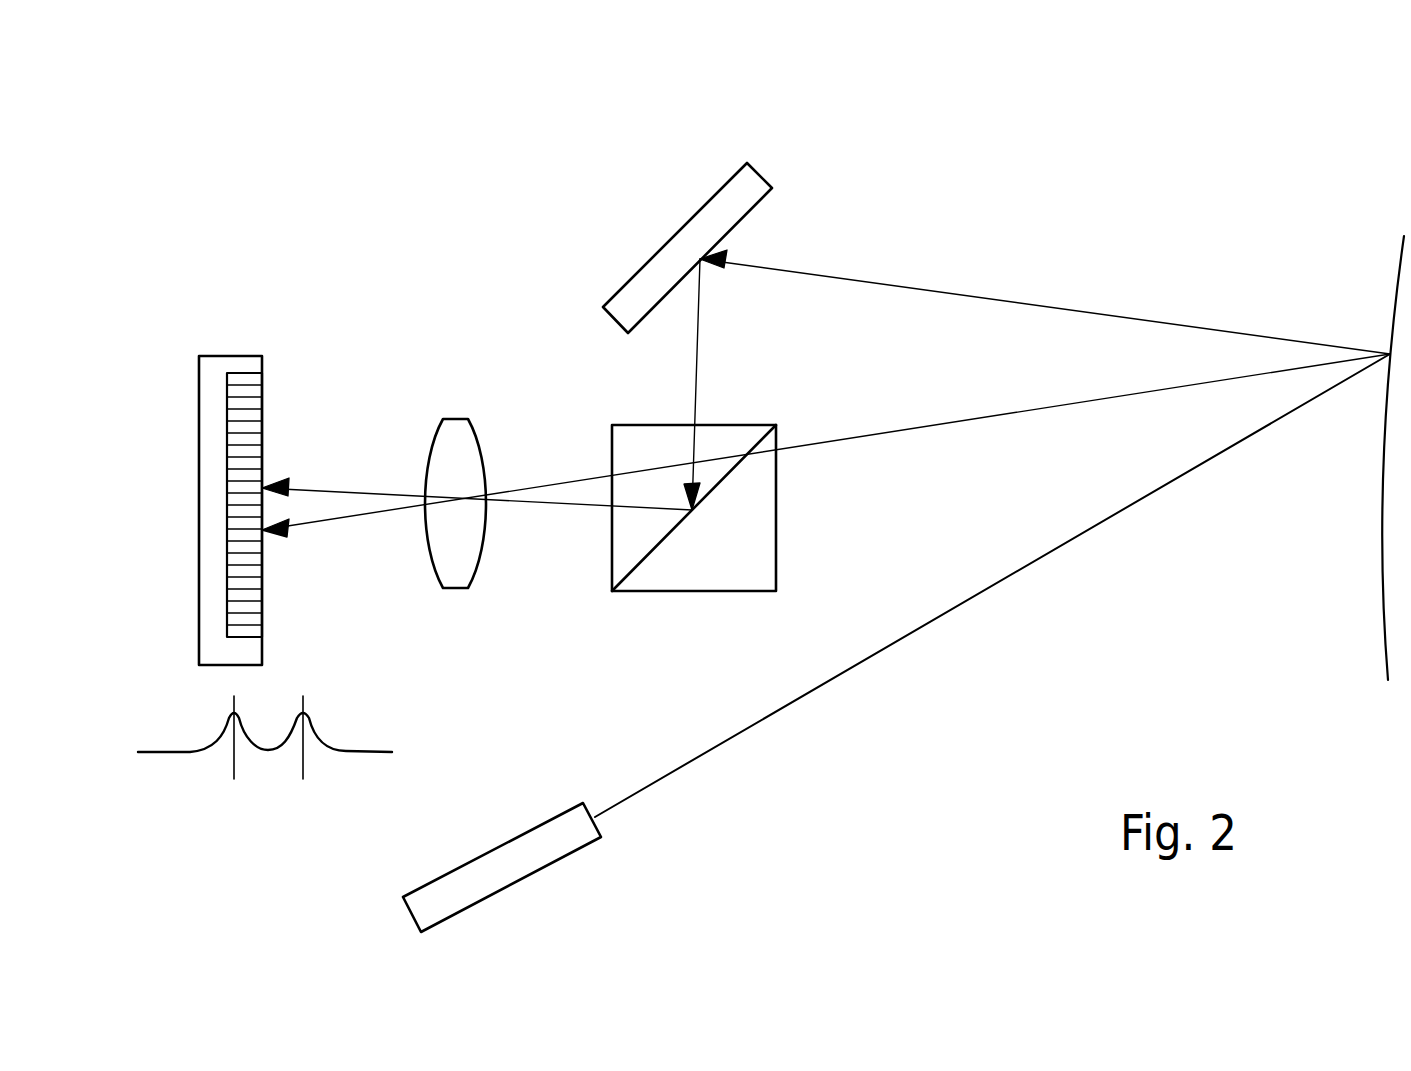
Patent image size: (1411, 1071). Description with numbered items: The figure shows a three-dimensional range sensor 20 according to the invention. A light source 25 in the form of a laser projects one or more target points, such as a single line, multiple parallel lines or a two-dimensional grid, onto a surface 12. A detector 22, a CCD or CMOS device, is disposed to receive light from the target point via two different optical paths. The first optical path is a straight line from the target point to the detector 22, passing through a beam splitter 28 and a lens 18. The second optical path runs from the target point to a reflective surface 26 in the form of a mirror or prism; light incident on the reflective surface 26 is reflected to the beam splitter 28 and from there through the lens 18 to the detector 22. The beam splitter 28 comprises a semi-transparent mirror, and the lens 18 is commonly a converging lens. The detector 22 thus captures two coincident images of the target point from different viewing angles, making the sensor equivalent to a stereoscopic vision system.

The 3-D range sensor 20 is at (354, 124).
The surface 12 is at (1405, 245).
The reflective surface 26 is at (752, 182).
The beam splitter 28 is at (700, 577).
The lens 18 is at (449, 437).
The detector 22 is at (212, 365).
The light source 25 is at (530, 865).